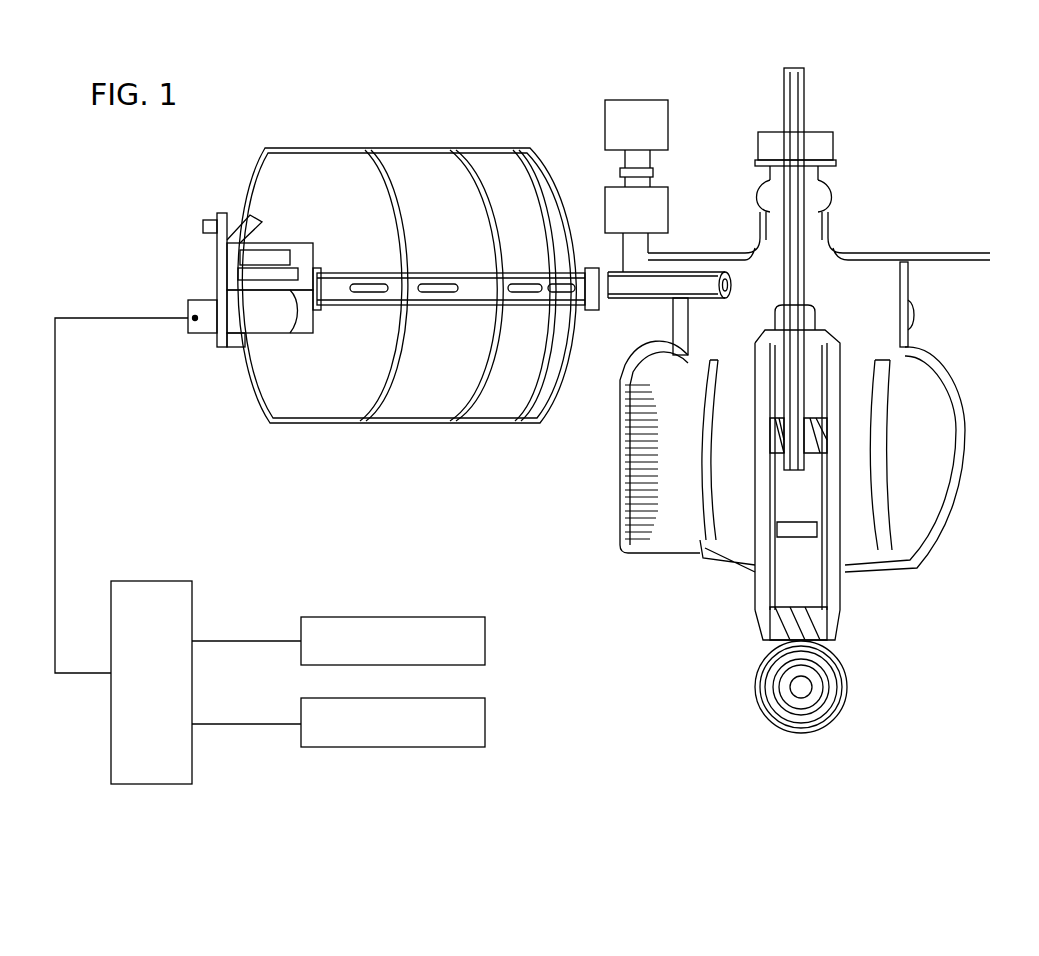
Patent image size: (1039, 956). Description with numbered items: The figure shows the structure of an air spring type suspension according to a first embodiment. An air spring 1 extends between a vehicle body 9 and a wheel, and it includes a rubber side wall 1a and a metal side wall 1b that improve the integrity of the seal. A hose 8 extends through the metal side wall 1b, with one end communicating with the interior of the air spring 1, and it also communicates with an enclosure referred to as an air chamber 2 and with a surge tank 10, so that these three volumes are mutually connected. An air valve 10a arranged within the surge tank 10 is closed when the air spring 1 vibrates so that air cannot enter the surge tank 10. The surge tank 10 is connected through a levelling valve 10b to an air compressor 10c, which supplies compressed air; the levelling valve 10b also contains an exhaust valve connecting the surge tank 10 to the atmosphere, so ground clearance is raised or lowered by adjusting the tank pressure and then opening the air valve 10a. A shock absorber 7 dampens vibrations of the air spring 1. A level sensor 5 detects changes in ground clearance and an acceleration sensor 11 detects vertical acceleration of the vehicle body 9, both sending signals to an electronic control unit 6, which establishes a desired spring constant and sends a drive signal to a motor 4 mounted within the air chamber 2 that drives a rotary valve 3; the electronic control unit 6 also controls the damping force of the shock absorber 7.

The air spring 1 is at (820, 417).
The rubber side wall 1a is at (956, 432).
The metal side wall 1b is at (910, 287).
The air chamber 2 is at (390, 148).
The rotary valve 3 is at (388, 292).
The motor 4 is at (222, 243).
The level sensor 5 is at (486, 632).
The electronic control unit 6 is at (171, 784).
The shock absorber 7 is at (807, 300).
The hose 8 is at (636, 292).
The vehicle body 9 is at (978, 253).
The surge tank 10 is at (723, 132).
The air valve 10a is at (660, 232).
The levelling valve 10b is at (653, 172).
The air compressor 10c is at (645, 100).
The acceleration sensor 11 is at (486, 710).